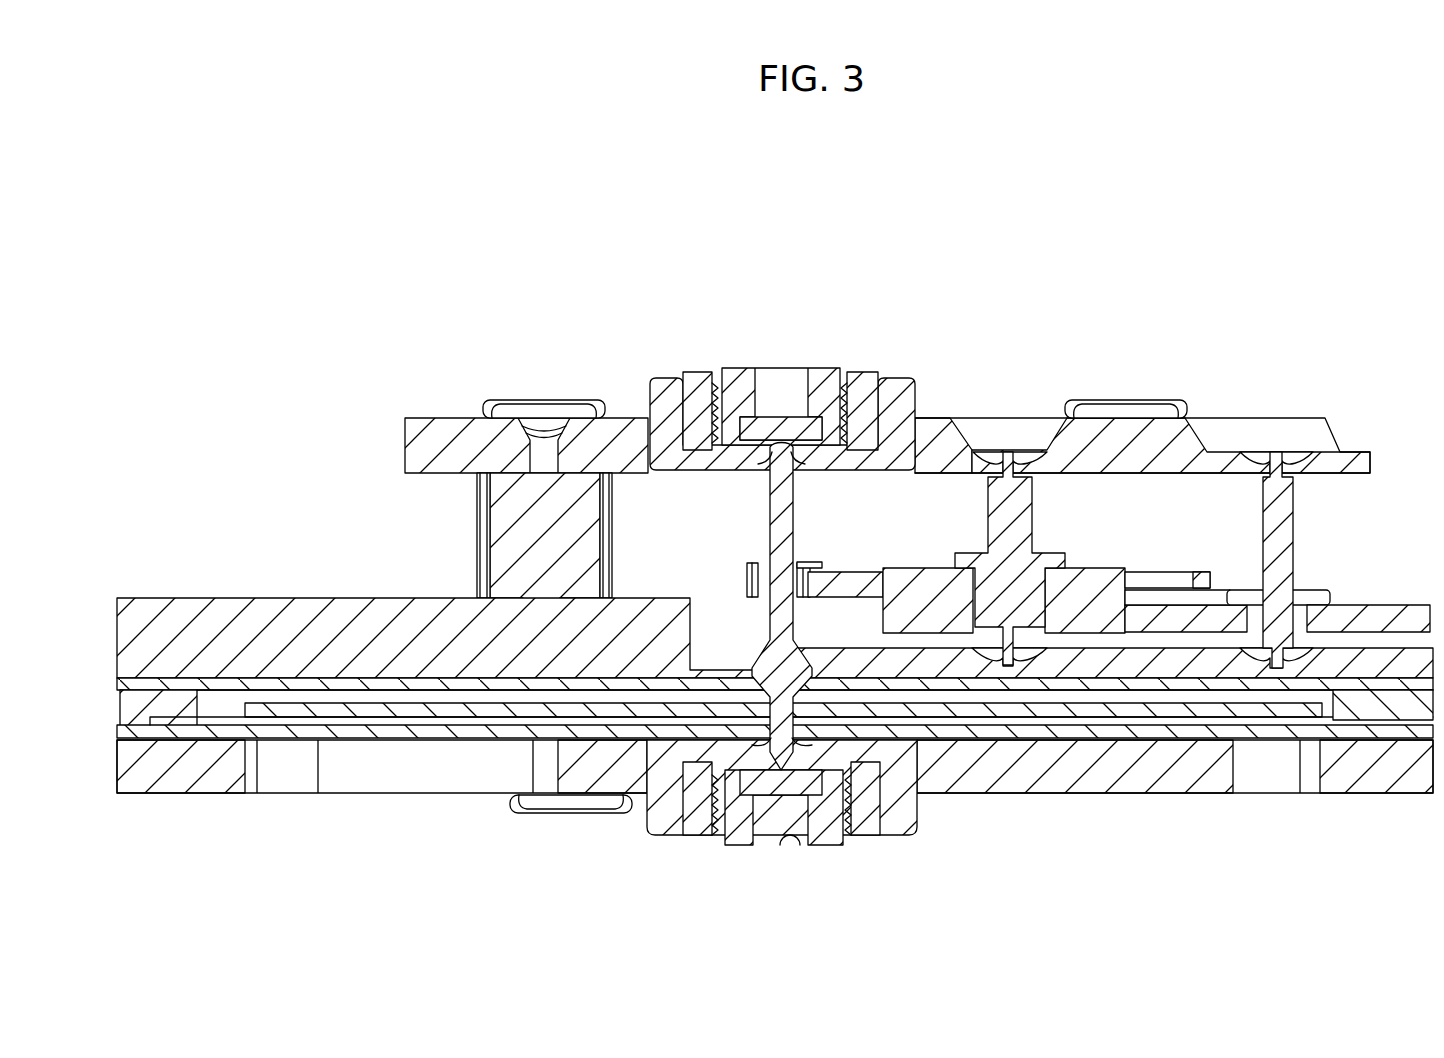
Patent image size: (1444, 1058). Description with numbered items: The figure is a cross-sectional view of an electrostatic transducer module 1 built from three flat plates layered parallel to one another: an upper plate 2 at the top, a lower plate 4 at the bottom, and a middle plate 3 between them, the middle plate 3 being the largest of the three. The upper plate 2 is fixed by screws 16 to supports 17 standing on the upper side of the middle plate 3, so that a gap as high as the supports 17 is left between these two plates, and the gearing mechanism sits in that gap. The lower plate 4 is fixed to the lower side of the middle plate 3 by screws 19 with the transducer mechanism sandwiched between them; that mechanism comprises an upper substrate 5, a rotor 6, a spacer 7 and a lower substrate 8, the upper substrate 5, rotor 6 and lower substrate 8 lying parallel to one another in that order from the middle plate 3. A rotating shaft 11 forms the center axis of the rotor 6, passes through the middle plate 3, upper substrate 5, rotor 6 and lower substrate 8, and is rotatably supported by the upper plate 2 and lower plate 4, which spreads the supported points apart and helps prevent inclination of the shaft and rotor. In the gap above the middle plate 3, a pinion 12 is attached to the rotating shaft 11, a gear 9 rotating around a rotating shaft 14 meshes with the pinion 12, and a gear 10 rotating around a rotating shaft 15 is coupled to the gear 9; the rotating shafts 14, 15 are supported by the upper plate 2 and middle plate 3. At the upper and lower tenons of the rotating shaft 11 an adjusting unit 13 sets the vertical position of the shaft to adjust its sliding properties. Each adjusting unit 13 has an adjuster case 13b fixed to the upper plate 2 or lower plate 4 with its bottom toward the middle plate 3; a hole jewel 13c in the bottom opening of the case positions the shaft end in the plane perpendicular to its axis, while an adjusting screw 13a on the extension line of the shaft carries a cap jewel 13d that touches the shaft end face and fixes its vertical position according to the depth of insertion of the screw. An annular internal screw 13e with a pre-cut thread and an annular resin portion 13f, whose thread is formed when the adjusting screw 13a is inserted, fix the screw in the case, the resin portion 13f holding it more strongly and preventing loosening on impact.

The electrostatic transducer module 1 is at (1250, 288).
The upper plate 2 is at (412, 454).
The middle plate 3 is at (185, 610).
The lower plate 4 is at (1358, 792).
The upper substrate 5 is at (390, 688).
The rotor 6 is at (423, 710).
The spacer 7 is at (133, 704).
The lower substrate 8 is at (463, 733).
The gear 9 is at (921, 573).
The gear 10 is at (1417, 607).
The rotating shaft 11 is at (775, 530).
The pinion 12 is at (747, 580).
The adjusting unit 13 is at (789, 602).
The adjusting screw 13a is at (818, 398).
The adjuster case 13b is at (667, 403).
The hole jewel 13c is at (757, 455).
The cap jewel 13d is at (781, 373).
The internal screw 13e is at (868, 398).
The resin portion 13f is at (870, 435).
The rotating shaft 14 is at (992, 517).
The rotating shaft 15 is at (1284, 564).
The screws 16 is at (547, 398).
The supports 17 is at (495, 532).
The screws 19 is at (567, 814).